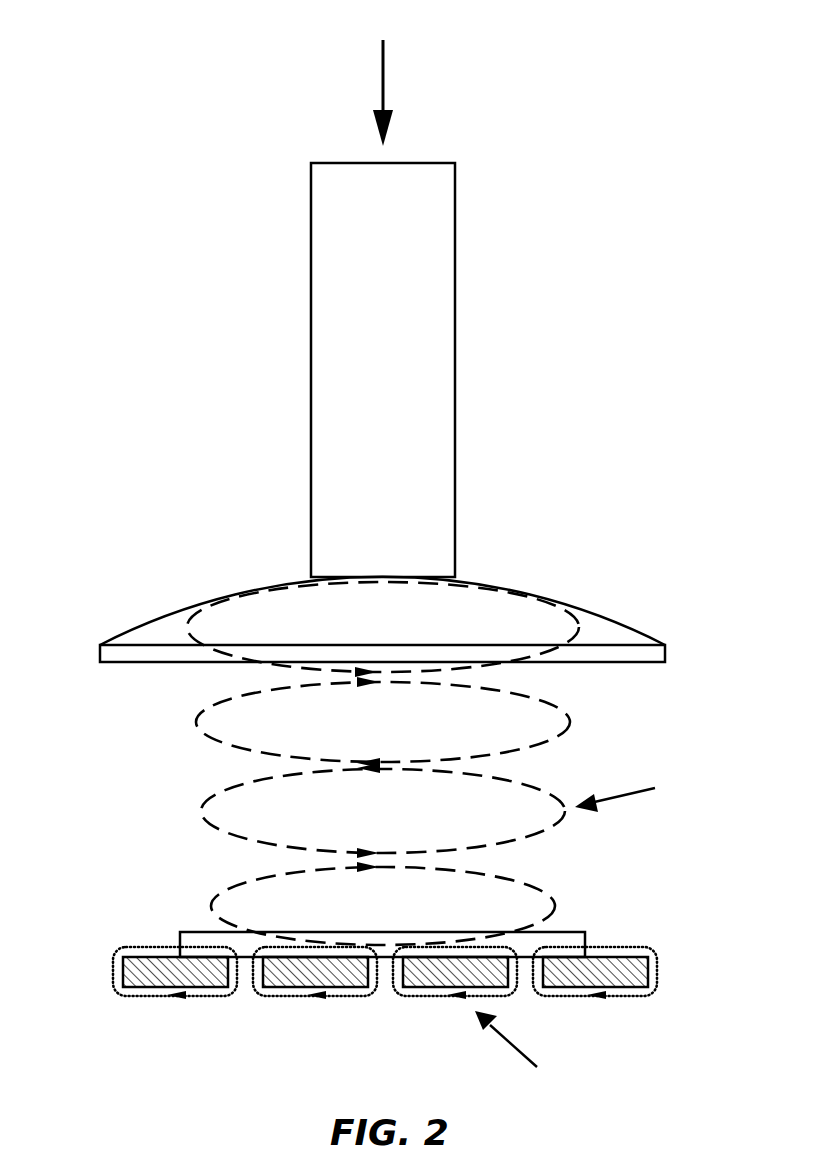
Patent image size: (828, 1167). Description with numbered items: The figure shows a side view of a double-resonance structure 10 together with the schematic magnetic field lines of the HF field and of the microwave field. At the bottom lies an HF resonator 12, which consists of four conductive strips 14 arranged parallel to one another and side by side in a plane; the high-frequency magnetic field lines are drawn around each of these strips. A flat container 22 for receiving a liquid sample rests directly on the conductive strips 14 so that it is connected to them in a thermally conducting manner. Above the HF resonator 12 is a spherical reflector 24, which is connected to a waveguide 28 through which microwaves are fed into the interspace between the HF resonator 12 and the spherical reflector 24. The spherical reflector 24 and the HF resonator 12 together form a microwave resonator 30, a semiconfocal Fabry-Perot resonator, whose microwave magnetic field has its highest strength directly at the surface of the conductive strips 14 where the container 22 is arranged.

The double-resonance structure 10 is at (150, 255).
The HF resonator 12 is at (398, 962).
The conductive strips 14 is at (140, 982).
The container 22 is at (190, 932).
The spherical reflector 24 is at (590, 623).
The waveguide 28 is at (435, 247).
The microwave resonator 30 is at (614, 721).